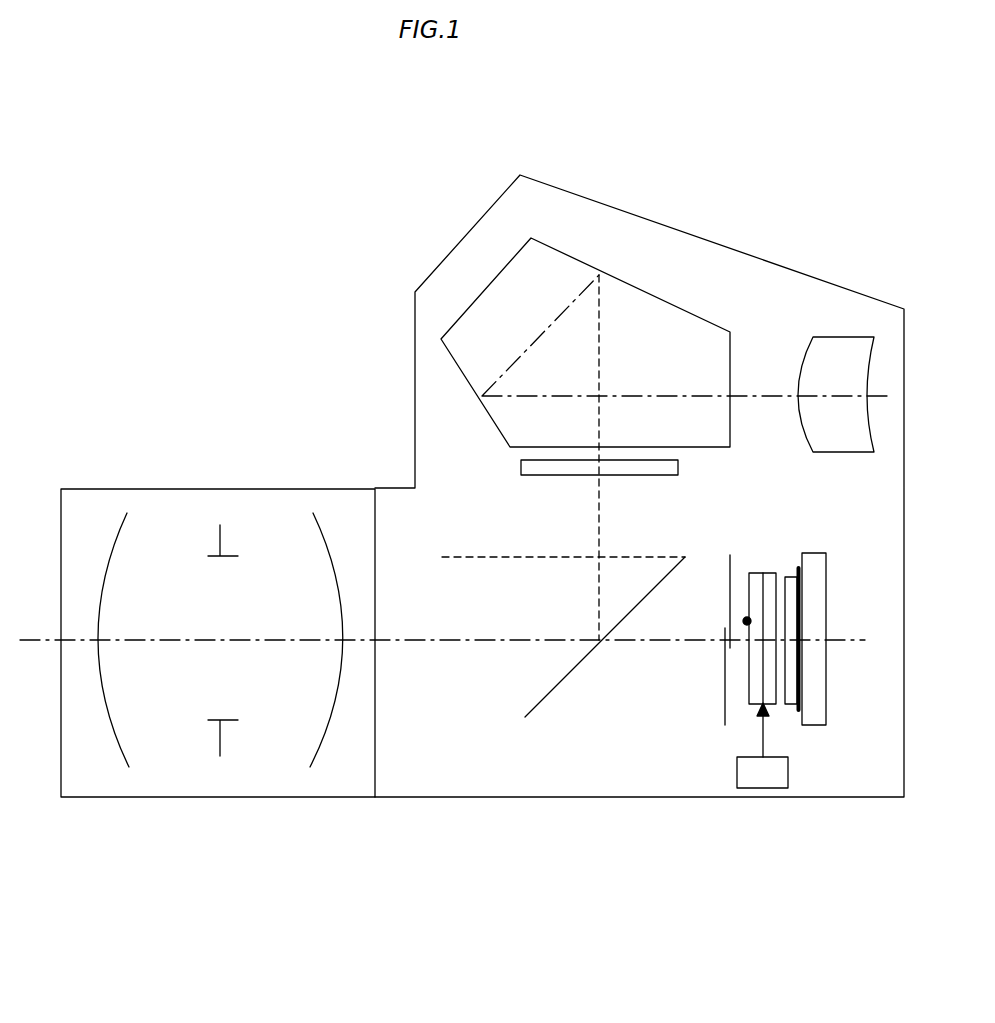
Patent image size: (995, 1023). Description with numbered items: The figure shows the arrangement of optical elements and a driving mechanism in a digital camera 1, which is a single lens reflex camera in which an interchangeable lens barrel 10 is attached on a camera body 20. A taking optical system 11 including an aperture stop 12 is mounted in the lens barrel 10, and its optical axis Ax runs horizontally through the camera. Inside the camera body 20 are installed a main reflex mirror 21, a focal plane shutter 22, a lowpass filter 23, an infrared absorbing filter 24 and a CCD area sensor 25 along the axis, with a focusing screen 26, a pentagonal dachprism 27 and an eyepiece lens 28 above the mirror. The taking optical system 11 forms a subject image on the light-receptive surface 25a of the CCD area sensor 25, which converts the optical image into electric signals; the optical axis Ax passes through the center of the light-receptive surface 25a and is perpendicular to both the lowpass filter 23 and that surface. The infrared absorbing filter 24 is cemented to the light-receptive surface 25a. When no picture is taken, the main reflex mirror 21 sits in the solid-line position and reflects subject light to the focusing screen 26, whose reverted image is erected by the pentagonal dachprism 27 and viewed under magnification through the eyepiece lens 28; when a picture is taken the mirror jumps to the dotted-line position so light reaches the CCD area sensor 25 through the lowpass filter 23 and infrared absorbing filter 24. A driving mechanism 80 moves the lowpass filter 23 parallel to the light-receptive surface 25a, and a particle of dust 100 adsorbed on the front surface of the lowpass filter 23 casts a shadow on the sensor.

The digital camera 1 is at (190, 242).
The lens barrel 10 is at (320, 489).
The taking optical system 11 is at (125, 513).
The aperture stop 12 is at (220, 525).
The camera body 20 is at (435, 272).
The main reflex mirror 21 is at (490, 557).
The focal plane shutter 22 is at (730, 555).
The lowpass filter 23 is at (763, 573).
The infrared absorbing filter 24 is at (790, 577).
The CCD area sensor 25 is at (828, 588).
The light-receptive surface 25a is at (802, 612).
The focusing screen 26 is at (633, 475).
The pentagonal dachprism 27 is at (663, 301).
The eyepiece lens 28 is at (853, 337).
The driving mechanism 80 is at (765, 780).
The dust 100 is at (747, 621).
The optical axis Ax is at (418, 640).